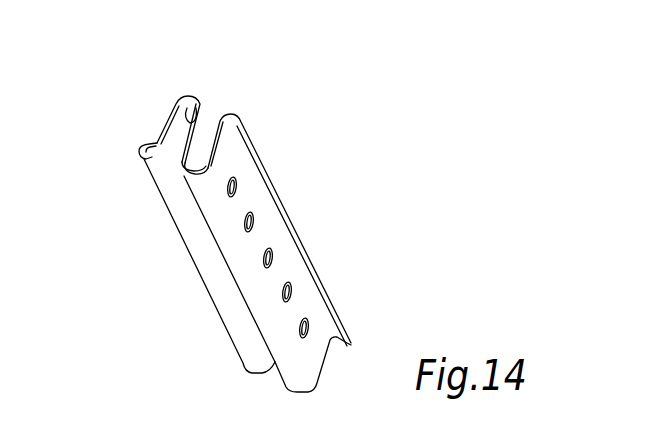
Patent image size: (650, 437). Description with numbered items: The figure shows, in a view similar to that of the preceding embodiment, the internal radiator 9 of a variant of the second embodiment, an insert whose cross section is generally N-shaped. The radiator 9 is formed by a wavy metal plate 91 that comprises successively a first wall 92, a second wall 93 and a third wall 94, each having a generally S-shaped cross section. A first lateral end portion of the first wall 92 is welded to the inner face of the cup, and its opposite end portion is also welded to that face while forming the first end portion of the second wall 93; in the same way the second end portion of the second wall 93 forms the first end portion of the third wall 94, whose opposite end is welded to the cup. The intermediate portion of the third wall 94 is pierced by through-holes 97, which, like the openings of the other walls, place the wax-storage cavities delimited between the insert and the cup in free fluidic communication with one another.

The internal radiator 9 is at (252, 196).
The wavy metal plate 91 is at (292, 173).
The first wall 92 is at (170, 125).
The second wall 93 is at (185, 103).
The third wall 94 is at (213, 115).
The through-holes 97 is at (237, 188).